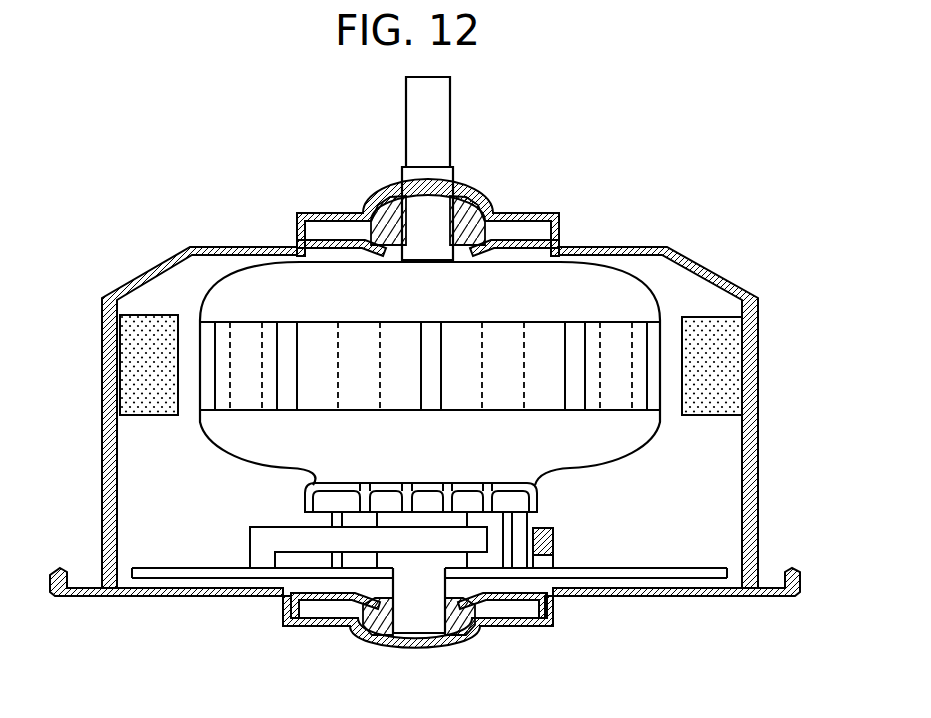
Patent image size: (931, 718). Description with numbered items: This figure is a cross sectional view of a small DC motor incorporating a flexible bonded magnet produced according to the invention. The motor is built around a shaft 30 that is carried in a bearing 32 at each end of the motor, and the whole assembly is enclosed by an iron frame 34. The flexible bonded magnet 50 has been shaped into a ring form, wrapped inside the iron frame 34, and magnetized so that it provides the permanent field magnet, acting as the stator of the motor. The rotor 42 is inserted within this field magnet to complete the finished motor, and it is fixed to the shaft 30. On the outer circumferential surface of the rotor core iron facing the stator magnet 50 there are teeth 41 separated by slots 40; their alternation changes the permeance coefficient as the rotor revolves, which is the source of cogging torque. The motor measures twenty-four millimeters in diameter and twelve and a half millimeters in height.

The shaft 30 is at (417, 203).
The bearing 32 is at (478, 207).
The frame 34 is at (760, 432).
The slot 40 is at (287, 327).
The teeth 41 is at (363, 403).
The rotor 42 is at (640, 275).
The stator (magnet) 50 is at (150, 342).